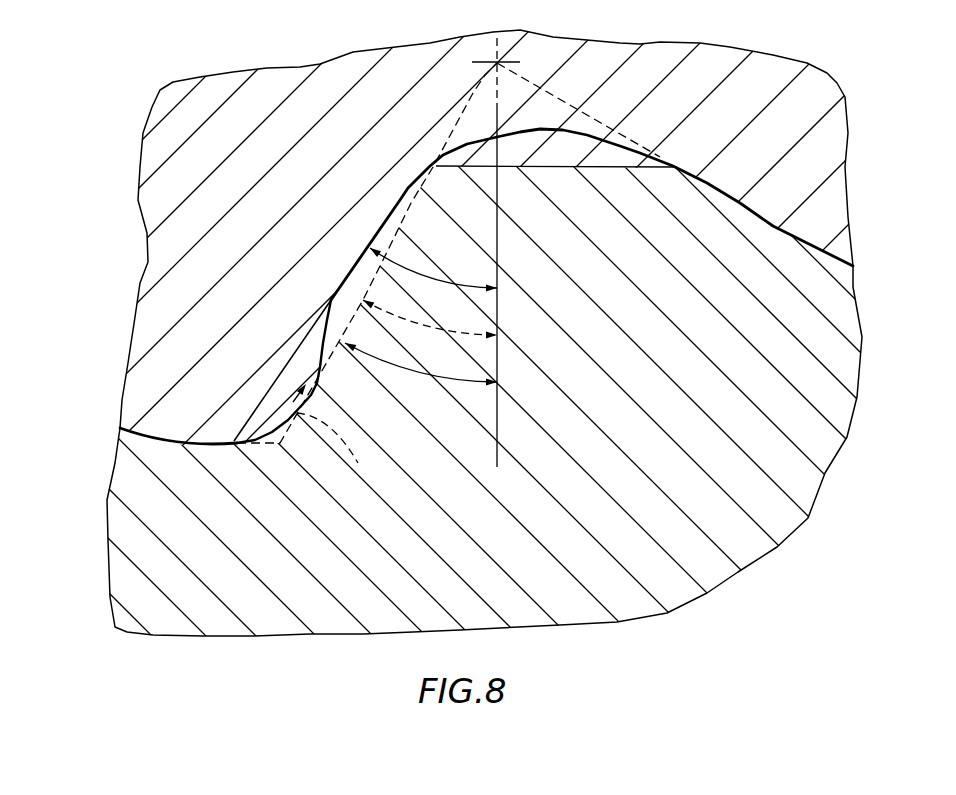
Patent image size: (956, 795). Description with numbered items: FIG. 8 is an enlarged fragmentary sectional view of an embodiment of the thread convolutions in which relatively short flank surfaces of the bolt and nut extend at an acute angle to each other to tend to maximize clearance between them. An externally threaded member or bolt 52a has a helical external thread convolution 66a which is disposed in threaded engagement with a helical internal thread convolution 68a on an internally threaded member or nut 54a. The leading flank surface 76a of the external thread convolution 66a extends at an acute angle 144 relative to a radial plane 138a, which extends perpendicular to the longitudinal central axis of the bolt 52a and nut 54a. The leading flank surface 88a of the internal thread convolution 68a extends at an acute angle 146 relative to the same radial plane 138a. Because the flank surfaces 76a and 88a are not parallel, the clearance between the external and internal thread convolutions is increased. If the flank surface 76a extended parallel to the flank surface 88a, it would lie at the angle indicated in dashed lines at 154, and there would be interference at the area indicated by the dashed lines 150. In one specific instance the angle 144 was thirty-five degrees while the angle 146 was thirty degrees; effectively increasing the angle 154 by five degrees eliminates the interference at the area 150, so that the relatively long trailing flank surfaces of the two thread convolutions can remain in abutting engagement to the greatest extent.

The externally threaded member or bolt 52a is at (152, 104).
The internally threaded member or nut 54a is at (158, 634).
The helical external thread convolution 66a is at (675, 146).
The helical internal thread convolution 68a is at (160, 449).
The leading flank surface of the external thread convolution 76a is at (318, 348).
The leading flank surface of the internal thread convolution 88a is at (327, 378).
The radial plane 138a is at (498, 247).
The acute angle 144 is at (428, 274).
The acute angle 146 is at (418, 378).
The dashed lines indicating interference area 150 is at (357, 468).
The angle indicated in dashed lines 154 is at (427, 327).